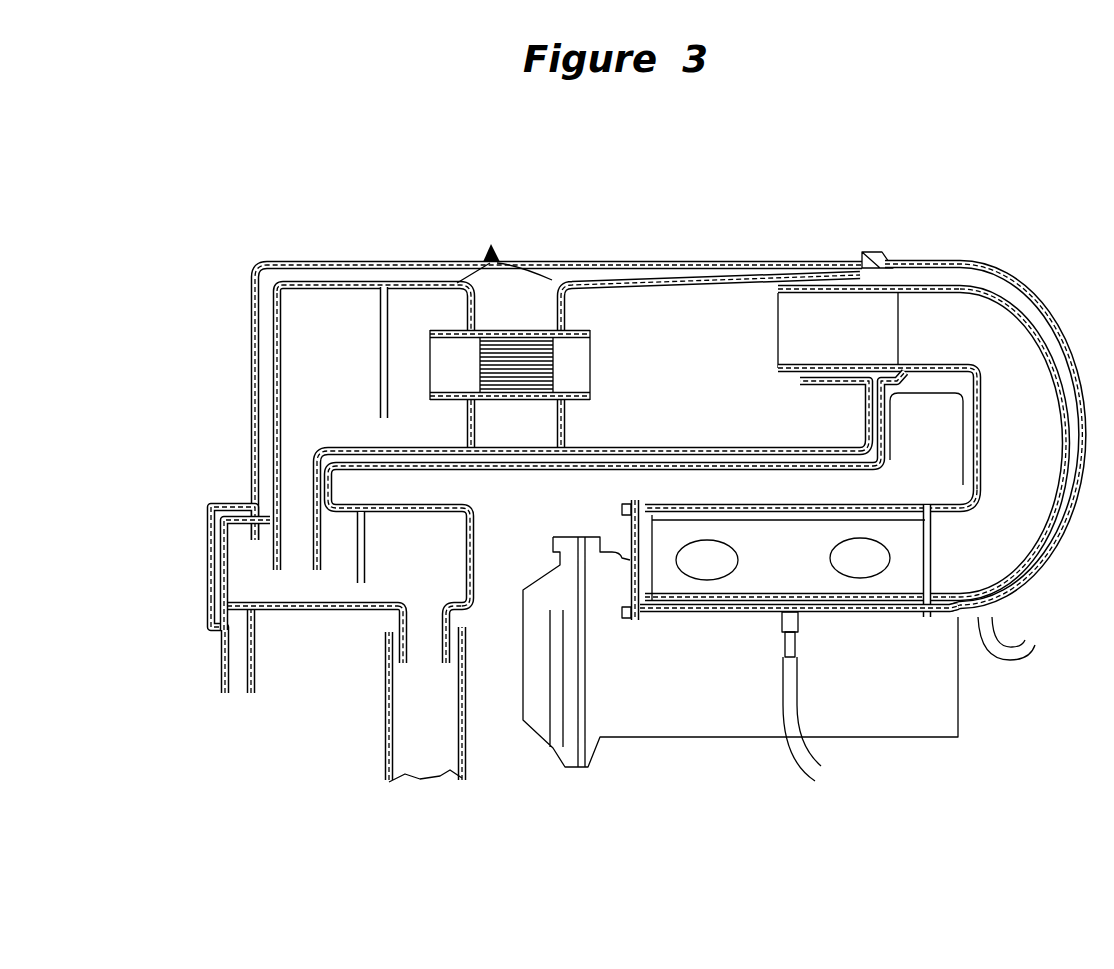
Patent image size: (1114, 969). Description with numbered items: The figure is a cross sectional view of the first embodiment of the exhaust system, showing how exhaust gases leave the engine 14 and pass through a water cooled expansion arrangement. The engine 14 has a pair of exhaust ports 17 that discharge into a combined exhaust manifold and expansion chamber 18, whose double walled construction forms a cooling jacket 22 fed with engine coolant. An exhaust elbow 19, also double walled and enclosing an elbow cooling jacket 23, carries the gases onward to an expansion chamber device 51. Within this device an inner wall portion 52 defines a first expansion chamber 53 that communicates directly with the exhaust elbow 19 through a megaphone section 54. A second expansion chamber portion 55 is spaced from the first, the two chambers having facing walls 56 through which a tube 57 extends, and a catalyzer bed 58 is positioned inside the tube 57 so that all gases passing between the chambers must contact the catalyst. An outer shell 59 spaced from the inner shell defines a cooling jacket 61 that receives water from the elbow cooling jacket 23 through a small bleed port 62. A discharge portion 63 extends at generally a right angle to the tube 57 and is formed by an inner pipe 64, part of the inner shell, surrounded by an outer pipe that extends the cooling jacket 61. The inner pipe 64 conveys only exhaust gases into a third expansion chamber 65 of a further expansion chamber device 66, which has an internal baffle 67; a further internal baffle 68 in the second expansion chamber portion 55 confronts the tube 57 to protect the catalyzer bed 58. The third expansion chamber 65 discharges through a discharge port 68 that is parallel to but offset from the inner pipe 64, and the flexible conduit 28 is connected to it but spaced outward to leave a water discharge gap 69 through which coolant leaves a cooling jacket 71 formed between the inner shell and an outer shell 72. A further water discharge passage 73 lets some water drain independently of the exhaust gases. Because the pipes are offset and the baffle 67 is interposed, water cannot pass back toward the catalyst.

The engine 14 is at (913, 713).
The exhaust ports 17 is at (847, 567).
The combined exhaust manifold and expansion chamber 18 is at (855, 628).
The exhaust elbow 19 is at (1017, 282).
The cooling jacket 22 is at (758, 508).
The elbow cooling jacket 23 is at (967, 442).
The flexible conduit 28 is at (382, 742).
The expansion chamber device 51 is at (566, 255).
The inner wall portion 52 is at (504, 249).
The first expansion chamber 53 is at (728, 283).
The megaphone section 54 is at (795, 295).
The second expansion chamber portion 55 is at (292, 346).
The facing walls 56 is at (482, 403).
The tube 57 is at (574, 330).
The catalyzer bed 58 is at (553, 353).
The outer shell 59 is at (333, 262).
The cooling jacket 61 is at (288, 272).
The bleed port 62 is at (862, 452).
The discharge portion 63 is at (234, 482).
The inner pipe 64 is at (272, 452).
The third expansion chamber 65 is at (427, 578).
The expansion chamber device 66 is at (490, 541).
The internal baffle 67 is at (355, 562).
The internal baffle / discharge port 68 is at (380, 334).
The water discharge gap 69 is at (448, 663).
The cooling jacket 71 is at (208, 568).
The outer shell 72 is at (207, 518).
The water discharge passage 73 is at (220, 667).